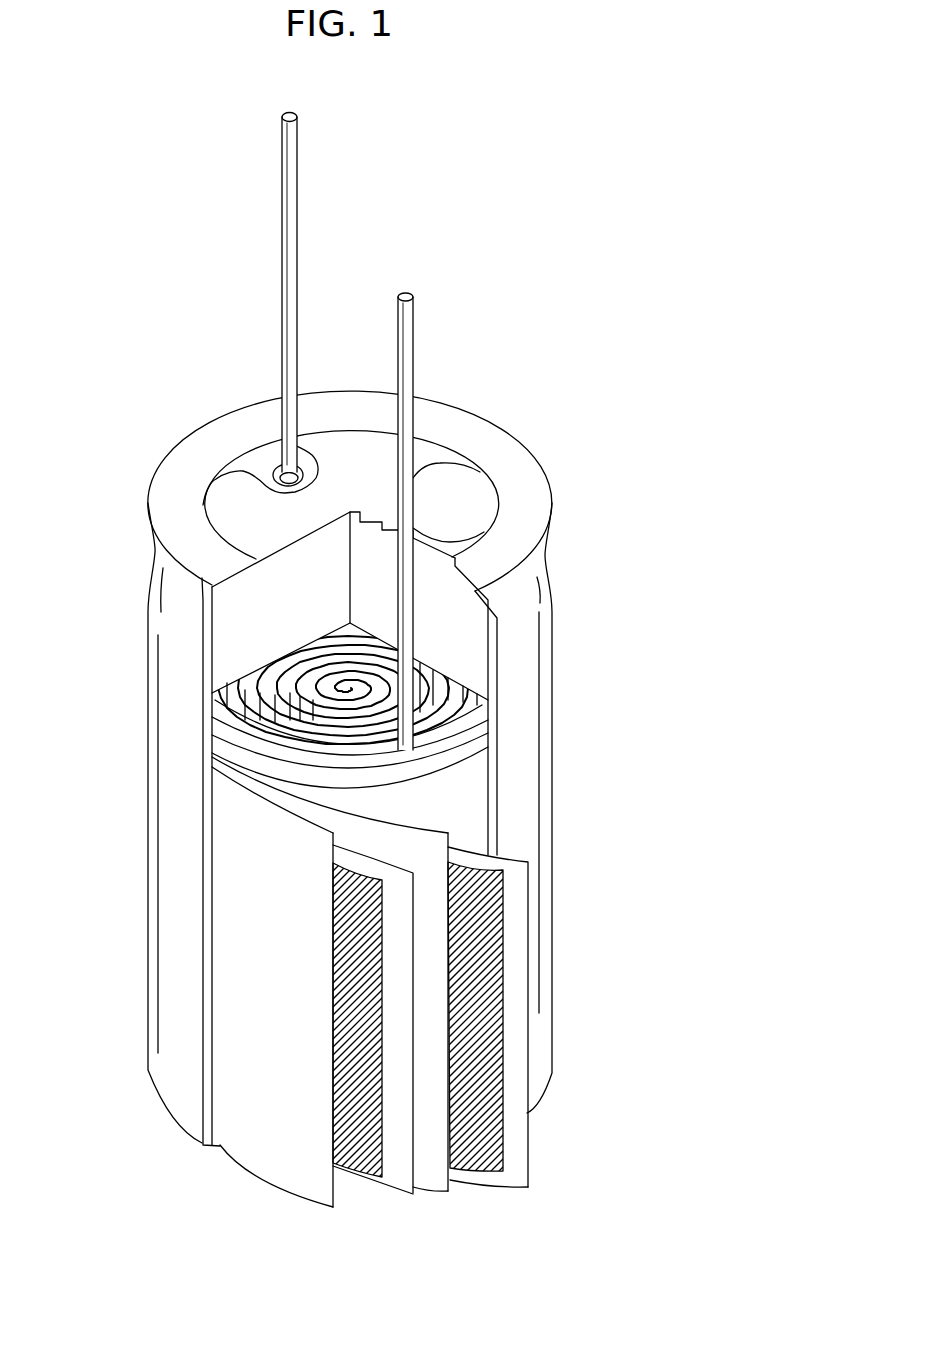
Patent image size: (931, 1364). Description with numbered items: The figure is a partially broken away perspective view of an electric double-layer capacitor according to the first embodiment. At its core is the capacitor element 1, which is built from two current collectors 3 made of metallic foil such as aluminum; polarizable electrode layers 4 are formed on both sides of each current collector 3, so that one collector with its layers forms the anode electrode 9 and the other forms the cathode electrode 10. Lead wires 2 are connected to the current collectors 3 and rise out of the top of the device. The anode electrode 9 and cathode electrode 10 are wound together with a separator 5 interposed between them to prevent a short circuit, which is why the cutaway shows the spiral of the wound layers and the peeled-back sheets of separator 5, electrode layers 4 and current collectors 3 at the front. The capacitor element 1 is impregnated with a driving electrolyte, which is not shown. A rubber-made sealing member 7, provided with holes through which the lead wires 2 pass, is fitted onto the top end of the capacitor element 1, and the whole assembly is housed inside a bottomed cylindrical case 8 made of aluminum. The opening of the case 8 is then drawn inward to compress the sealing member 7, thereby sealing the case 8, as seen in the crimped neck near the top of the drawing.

The capacitor element 1 is at (317, 722).
The lead wires 2 is at (297, 241).
The current collectors 3 is at (398, 1172).
The polarizable electrode layers 4 is at (360, 1170).
The separator 5 is at (437, 917).
The sealing member 7 is at (267, 588).
The case 8 is at (176, 859).
The anode electrode 9 is at (537, 1262).
The cathode electrode 10 is at (408, 1262).